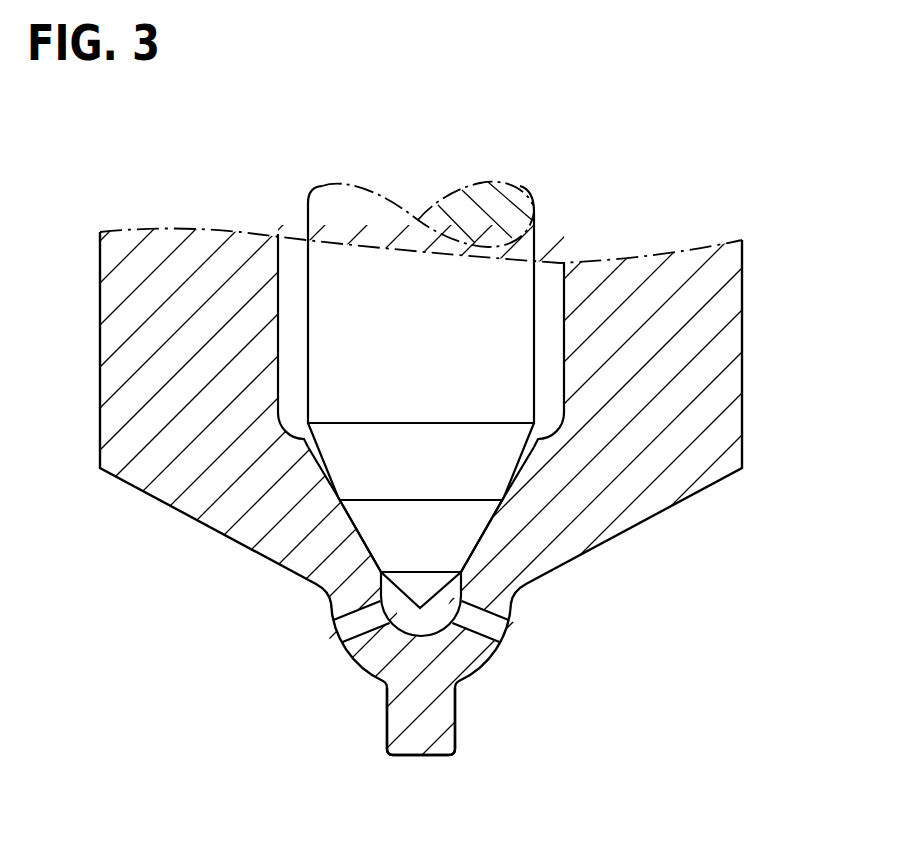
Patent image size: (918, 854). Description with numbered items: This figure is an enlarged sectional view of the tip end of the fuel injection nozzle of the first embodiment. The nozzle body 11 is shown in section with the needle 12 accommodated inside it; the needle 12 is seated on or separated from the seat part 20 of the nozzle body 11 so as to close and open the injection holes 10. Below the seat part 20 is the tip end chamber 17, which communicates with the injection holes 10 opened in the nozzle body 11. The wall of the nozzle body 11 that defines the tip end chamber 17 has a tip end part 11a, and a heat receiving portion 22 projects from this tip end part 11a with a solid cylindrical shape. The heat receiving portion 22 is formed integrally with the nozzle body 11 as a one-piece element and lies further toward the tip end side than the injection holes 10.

The injection hole 10 is at (510, 632).
The nozzle body 11 is at (715, 302).
The tip end part 11a is at (423, 661).
The needle 12 is at (487, 293).
The tip end chamber 17 is at (367, 673).
The seat part 20 is at (480, 533).
The heat receiving portion 22 is at (430, 720).